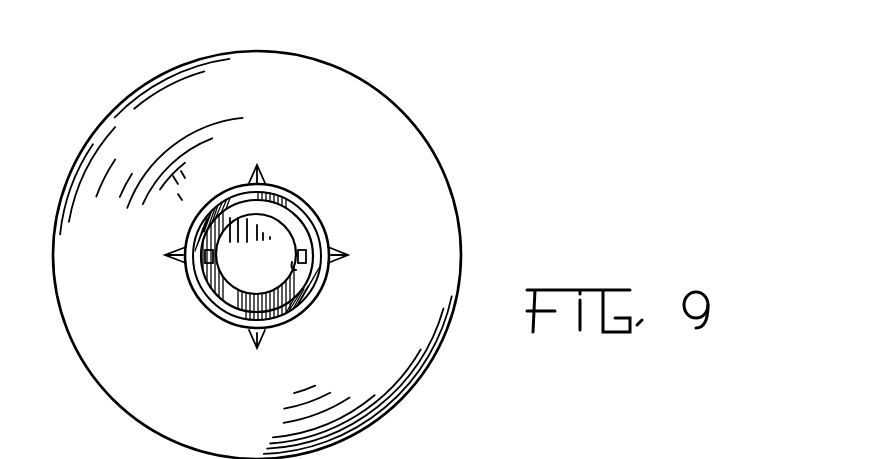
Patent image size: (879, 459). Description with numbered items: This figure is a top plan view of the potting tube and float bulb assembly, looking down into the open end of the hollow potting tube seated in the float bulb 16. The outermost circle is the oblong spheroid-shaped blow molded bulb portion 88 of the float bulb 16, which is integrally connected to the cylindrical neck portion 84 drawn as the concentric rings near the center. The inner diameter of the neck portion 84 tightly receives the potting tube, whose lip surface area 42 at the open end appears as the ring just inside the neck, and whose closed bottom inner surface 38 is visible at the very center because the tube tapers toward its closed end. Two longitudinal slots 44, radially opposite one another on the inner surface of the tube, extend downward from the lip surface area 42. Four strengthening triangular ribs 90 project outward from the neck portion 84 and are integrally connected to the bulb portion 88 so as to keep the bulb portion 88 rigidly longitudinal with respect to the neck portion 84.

The float bulb 16 is at (414, 111).
The blow molded bulb portion 88 is at (428, 186).
The cylindrical neck portion 84 is at (307, 205).
The lip surface area 42 is at (292, 292).
The closed bottom inner surface 38 is at (272, 268).
The longitudinal slots 44 is at (213, 273).
The strengthening triangular ribs 90 is at (262, 168).